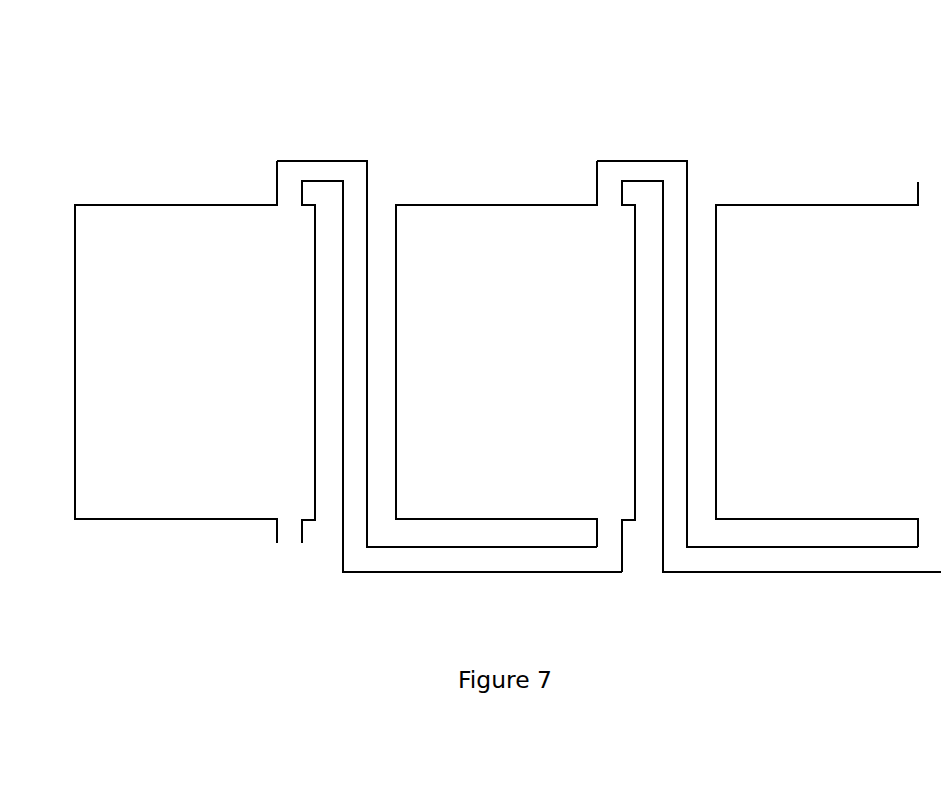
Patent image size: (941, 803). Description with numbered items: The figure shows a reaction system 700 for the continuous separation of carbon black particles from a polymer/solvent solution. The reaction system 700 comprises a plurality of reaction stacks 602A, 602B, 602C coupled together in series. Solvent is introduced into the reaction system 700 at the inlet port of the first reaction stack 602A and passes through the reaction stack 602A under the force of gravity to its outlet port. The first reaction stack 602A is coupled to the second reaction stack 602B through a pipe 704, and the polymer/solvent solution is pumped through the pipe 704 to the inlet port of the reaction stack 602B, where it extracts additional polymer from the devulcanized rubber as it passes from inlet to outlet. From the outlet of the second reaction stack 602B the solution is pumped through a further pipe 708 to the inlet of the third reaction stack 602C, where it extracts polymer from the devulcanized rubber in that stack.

The reaction system 700 is at (359, 44).
The reaction stack 602A is at (818, 205).
The reaction stack 602B is at (497, 205).
The reaction stack 602C is at (175, 205).
The pipe 704 is at (672, 161).
The connecting channel 708 is at (320, 161).